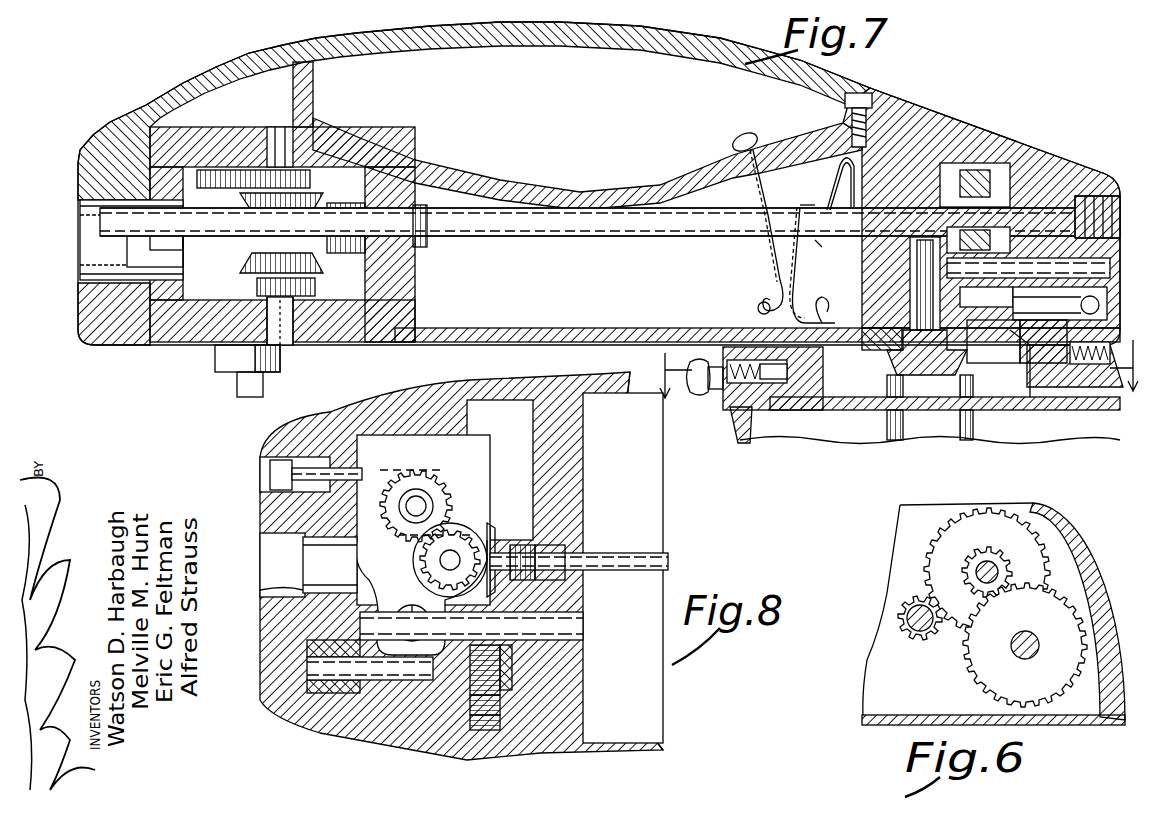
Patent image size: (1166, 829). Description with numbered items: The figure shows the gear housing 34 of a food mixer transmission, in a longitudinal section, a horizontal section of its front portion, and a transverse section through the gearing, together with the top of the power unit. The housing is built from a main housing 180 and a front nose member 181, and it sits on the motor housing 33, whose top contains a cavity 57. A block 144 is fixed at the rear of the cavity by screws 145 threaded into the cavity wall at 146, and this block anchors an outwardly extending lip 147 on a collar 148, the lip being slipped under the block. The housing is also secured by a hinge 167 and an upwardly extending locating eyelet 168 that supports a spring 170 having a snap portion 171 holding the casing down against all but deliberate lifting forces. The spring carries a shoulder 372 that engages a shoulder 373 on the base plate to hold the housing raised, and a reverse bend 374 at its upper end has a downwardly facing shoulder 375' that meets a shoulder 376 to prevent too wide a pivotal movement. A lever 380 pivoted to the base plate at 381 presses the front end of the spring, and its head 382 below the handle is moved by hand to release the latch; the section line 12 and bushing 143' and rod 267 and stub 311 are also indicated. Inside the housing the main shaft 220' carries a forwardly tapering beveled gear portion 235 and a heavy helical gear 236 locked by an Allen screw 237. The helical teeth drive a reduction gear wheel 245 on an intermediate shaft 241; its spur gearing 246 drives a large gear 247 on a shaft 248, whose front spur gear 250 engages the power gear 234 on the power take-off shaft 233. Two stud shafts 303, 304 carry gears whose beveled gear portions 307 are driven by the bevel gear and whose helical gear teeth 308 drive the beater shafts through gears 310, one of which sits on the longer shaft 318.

In FIG. 7, the section line 12 is at (905, 378).
In FIG. 7, the motor housing 33 is at (735, 423).
In FIG. 7, the gear housing 34 is at (948, 92).
In FIG. 7, the cavity 57 is at (812, 408).
In FIG. 7, the bushing 143' is at (951, 356).
In FIG. 7, the block 144 is at (1112, 366).
In FIG. 7, the screws 145 is at (1105, 332).
In FIG. 7, the threaded wall portion 146 is at (1110, 352).
In FIG. 7, the lip 147 is at (1078, 393).
In FIG. 7, the collar 148 is at (1010, 395).
In FIG. 7, the hinge 167 is at (1106, 302).
In FIG. 7, the locating eyelet 168 is at (820, 360).
In FIG. 7, the spring 170 is at (797, 258).
In FIG. 7, the snap portion 171 is at (855, 276).
In FIG. 7, the main housing 180 is at (947, 130).
In FIG. 7, the front nose member 181 is at (118, 135).
In FIG. 8, the front nose member 181 is at (262, 510).
In FIG. 7, the drive shaft 220' is at (610, 232).
In FIG. 8, the drive shaft 220' is at (606, 554).
In FIG. 6, the drive shaft 220' is at (859, 620).
In FIG. 7, the power take-off shaft 233 is at (135, 255).
In FIG. 8, the power take-off shaft 233 is at (305, 553).
In FIG. 8, the power gear 234 is at (262, 592).
In FIG. 7, the beveled gear portion 235 is at (340, 255).
In FIG. 7, the helical gear 236 is at (418, 250).
In FIG. 8, the helical gear 236 is at (540, 542).
In FIG. 6, the helical gear 236 is at (905, 630).
In FIG. 8, the Allen screw 237 is at (550, 535).
In FIG. 8, the intermediate shaft 241 is at (583, 630).
In FIG. 6, the intermediate shaft 241 is at (1003, 545).
In FIG. 8, the reduction gear wheel 245 is at (560, 691).
In FIG. 6, the reduction gear wheel 245 is at (925, 545).
In FIG. 8, the spur gearing 246 is at (500, 705).
In FIG. 6, the spur gearing 246 is at (985, 545).
In FIG. 8, the large gear 247 is at (500, 722).
In FIG. 6, the large gear 247 is at (962, 668).
In FIG. 6, the shaft 248 is at (1018, 655).
In FIG. 8, the spur gear 250 is at (328, 695).
In FIG. 7, the rod 267 is at (1027, 202).
In FIG. 7, the stud shaft 303 is at (280, 128).
In FIG. 7, the stud shaft 304 is at (295, 322).
In FIG. 7, the beveled gear portion 307 is at (312, 198).
In FIG. 8, the beveled gear portion 307 is at (489, 525).
In FIG. 7, the helical gear teeth 308 is at (310, 178).
In FIG. 8, the helical gear teeth 308 is at (462, 525).
In FIG. 7, the gear 310 is at (240, 168).
In FIG. 8, the gear 310 is at (455, 495).
In FIG. 7, the stub shaft 311 is at (265, 381).
In FIG. 8, the stub shaft 311 is at (416, 512).
In FIG. 8, the shaft 318 is at (320, 566).
In FIG. 7, the shoulder 372 is at (812, 205).
In FIG. 7, the shoulder 373 is at (782, 290).
In FIG. 7, the reverse bend 374 is at (845, 176).
In FIG. 7, the wire 375' is at (836, 239).
In FIG. 7, the shoulder 376 is at (834, 336).
In FIG. 7, the lever 380 is at (772, 240).
In FIG. 7, the pivot 381 is at (757, 310).
In FIG. 7, the head 382 is at (740, 136).